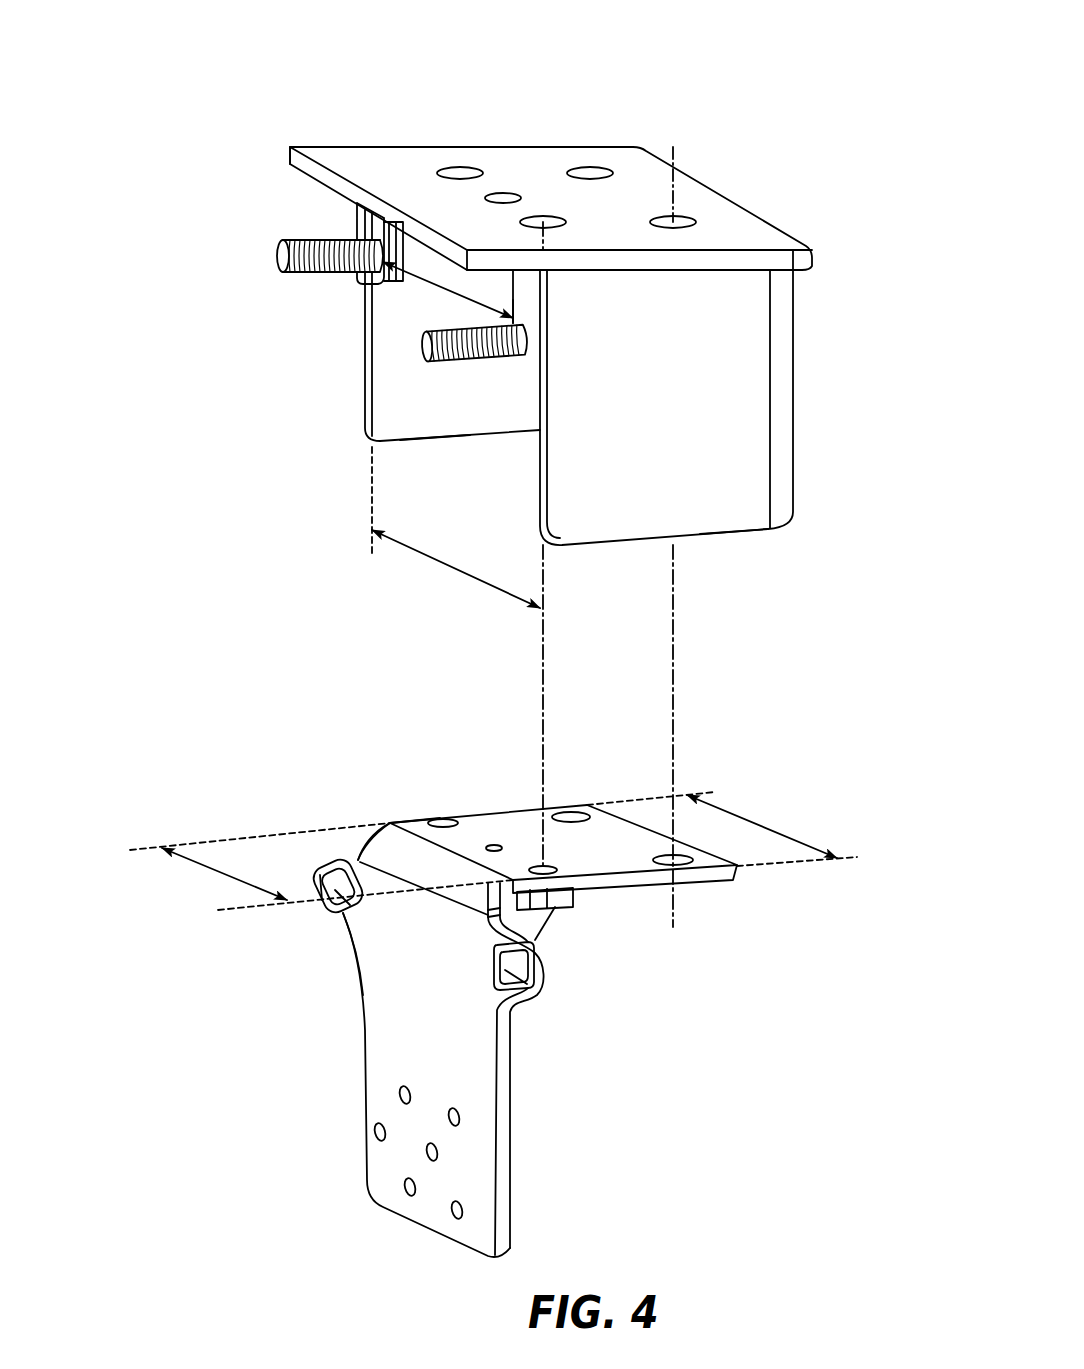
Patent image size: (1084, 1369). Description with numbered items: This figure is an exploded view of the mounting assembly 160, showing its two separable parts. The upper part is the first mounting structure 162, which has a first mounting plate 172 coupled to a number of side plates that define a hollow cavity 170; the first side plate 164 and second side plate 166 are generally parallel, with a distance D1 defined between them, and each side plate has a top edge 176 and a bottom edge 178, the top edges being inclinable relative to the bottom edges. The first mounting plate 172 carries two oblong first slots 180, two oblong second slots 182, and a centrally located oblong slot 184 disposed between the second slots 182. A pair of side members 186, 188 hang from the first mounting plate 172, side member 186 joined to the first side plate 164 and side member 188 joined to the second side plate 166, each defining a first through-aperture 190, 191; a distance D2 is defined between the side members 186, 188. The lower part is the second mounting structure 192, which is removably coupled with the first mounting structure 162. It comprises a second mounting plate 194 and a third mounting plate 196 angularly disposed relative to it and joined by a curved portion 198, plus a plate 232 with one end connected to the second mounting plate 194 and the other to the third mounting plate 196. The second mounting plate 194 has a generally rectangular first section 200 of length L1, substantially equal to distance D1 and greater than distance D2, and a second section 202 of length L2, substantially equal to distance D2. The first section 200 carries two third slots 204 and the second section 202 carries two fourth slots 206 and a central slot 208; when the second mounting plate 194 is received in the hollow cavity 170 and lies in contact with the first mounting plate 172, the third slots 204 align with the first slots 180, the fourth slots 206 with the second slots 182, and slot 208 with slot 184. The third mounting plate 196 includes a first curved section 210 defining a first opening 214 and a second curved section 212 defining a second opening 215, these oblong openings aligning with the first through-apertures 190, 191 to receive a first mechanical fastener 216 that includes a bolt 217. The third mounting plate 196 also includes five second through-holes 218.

The mounting assembly 160 is at (530, 465).
The first mounting structure 162 is at (583, 137).
The first side plate 164 is at (725, 482).
The second side plate 166 is at (471, 415).
The hollow cavity 170 is at (440, 403).
The first mounting plate 172 is at (533, 160).
The top edge 176 is at (717, 272).
The bottom edge 178 is at (735, 532).
The first slots 180 is at (591, 170).
The second slots 182 is at (460, 168).
The slot 184 is at (504, 194).
The side member 186 is at (530, 307).
The side member 188 is at (362, 275).
The first through-aperture 190 is at (520, 357).
The first through-aperture 191 is at (356, 232).
The second mounting structure 192 is at (493, 975).
The second mounting plate 194 is at (527, 813).
The third mounting plate 196 is at (405, 1045).
The curved portion 198 is at (377, 843).
The first section 200 is at (508, 790).
The second section 202 is at (406, 815).
The third slots 204 is at (573, 812).
The fourth slots 206 is at (445, 817).
The slot 208 is at (493, 842).
The first curved section 210 is at (557, 990).
The second curved section 212 is at (353, 850).
The first opening 214 is at (503, 958).
The second opening 215 is at (338, 886).
The first mechanical fastener 216 is at (318, 228).
The bolt 217 is at (285, 243).
The second through-holes 218 is at (403, 1185).
The plate 232 is at (345, 847).
The distance D1 is at (456, 527).
The distance D2 is at (438, 278).
The length L1 is at (722, 829).
The length L2 is at (321, 866).